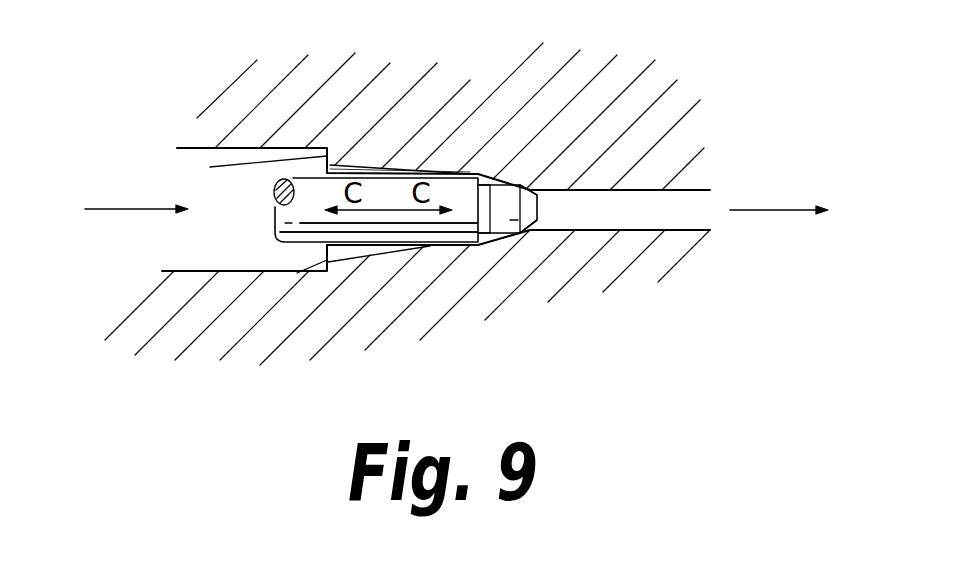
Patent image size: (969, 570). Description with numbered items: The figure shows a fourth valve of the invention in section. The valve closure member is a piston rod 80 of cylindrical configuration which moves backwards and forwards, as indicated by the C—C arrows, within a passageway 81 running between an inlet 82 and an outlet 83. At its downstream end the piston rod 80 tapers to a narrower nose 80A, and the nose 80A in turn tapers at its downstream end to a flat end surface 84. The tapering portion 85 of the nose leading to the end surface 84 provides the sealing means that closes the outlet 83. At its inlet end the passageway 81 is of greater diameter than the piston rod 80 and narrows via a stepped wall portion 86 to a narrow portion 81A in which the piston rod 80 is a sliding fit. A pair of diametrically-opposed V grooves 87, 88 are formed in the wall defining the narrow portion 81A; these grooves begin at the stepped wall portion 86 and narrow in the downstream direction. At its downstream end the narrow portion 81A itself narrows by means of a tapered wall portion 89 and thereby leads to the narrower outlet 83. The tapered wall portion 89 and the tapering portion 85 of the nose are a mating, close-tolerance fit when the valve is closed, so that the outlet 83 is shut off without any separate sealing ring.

The piston rod 80 is at (448, 217).
The nose 80A is at (503, 200).
The passageway 81 is at (253, 258).
The narrow portion of passageway 81A is at (495, 240).
The inlet 82 is at (188, 248).
The outlet 83 is at (666, 206).
The flat end surface 84 is at (590, 192).
The tapering portion of the nose 85 is at (533, 188).
The stepped wall portion 86 is at (210, 167).
The V groove 87 is at (344, 166).
The V groove 88 is at (364, 248).
The tapered wall portion 89 is at (513, 183).